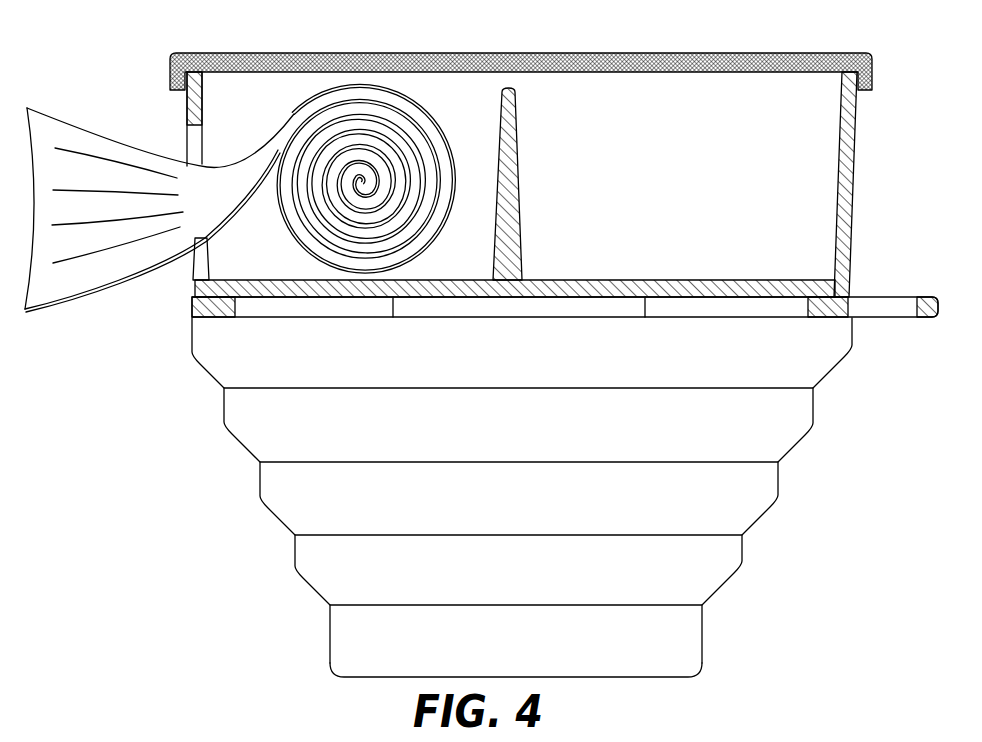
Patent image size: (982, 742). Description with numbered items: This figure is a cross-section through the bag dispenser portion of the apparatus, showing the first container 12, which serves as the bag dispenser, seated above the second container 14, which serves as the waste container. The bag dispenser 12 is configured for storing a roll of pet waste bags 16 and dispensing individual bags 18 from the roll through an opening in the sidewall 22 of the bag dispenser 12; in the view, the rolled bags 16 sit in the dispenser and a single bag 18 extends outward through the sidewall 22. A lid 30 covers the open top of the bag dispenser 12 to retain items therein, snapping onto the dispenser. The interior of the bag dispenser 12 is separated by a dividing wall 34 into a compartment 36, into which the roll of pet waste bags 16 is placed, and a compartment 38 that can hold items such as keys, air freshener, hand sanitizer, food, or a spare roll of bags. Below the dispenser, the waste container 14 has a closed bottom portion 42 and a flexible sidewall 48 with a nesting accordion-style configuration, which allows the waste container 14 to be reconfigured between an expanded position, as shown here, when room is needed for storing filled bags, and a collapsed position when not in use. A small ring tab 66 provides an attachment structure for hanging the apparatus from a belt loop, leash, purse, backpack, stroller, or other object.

The first container 12 is at (869, 195).
The second container 14 is at (818, 495).
The roll of pet waste bags 16 is at (265, 225).
The individual bag 18 is at (97, 293).
The sidewall 22 is at (857, 137).
The lid 30 is at (667, 52).
The dividing wall 34 is at (518, 131).
The compartment 36 is at (242, 110).
The compartment 38 is at (756, 106).
The closed bottom portion 42 is at (667, 688).
The flexible sidewall 48 is at (225, 432).
The ring tab 66 is at (930, 318).